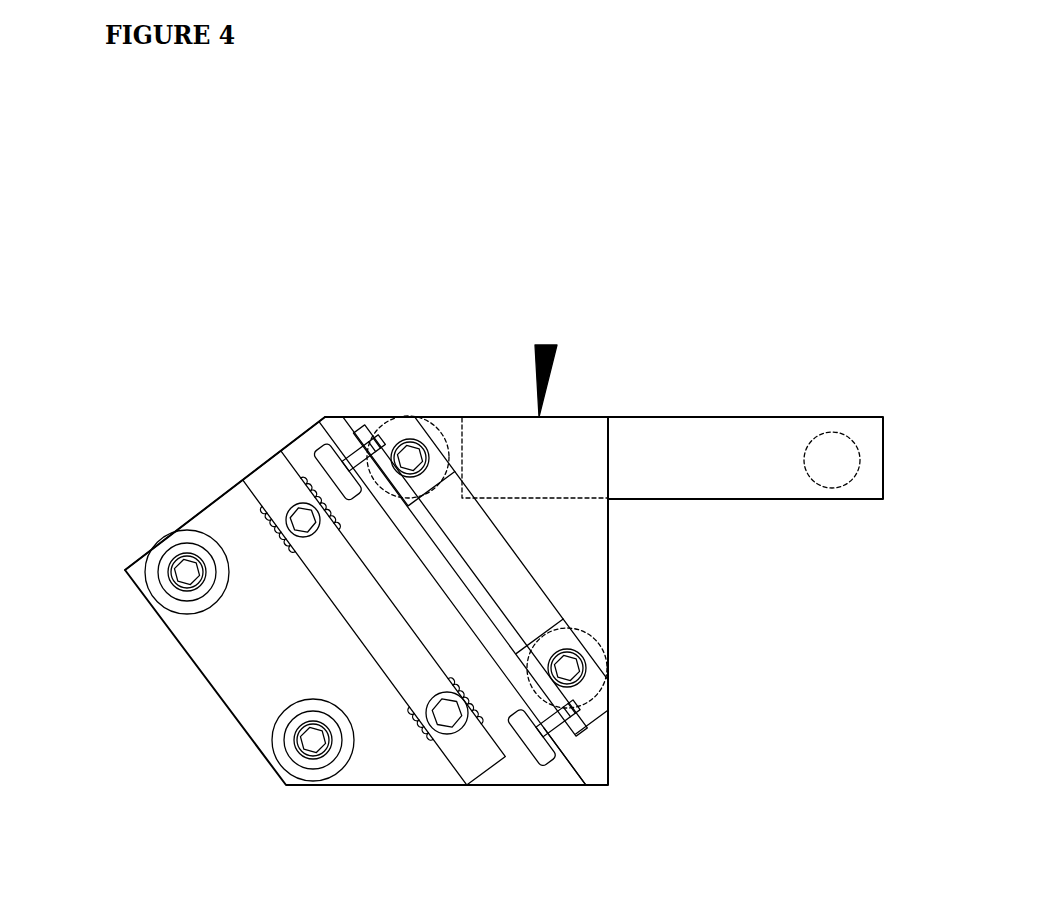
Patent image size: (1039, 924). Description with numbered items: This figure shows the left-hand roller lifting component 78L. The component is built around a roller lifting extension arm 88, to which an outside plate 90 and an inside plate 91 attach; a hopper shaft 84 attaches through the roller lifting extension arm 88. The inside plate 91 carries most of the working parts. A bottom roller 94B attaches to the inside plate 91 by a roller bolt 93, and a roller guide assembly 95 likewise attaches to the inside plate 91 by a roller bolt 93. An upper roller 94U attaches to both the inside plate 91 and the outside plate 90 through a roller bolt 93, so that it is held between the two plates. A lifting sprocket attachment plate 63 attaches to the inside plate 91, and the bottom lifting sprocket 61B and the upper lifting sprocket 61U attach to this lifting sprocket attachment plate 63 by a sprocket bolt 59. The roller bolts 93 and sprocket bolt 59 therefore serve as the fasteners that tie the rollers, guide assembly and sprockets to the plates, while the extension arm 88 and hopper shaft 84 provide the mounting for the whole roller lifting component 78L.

The roller lifting component 78L is at (546, 345).
The outside plate 90 is at (553, 440).
The roller lifting extension arm 88 is at (860, 430).
The hopper shaft 84 is at (817, 458).
The lifting sprocket attachment plate 63 is at (268, 482).
The roller guide assembly 95 is at (492, 553).
The upper roller 94U is at (397, 428).
The bottom roller 94B is at (278, 735).
The roller bolt 93 is at (412, 457).
The sprocket bolt 59 is at (305, 513).
The upper lifting sprocket 61U is at (263, 532).
The bottom lifting sprocket 61B is at (420, 743).
The inside plate 91 is at (533, 775).